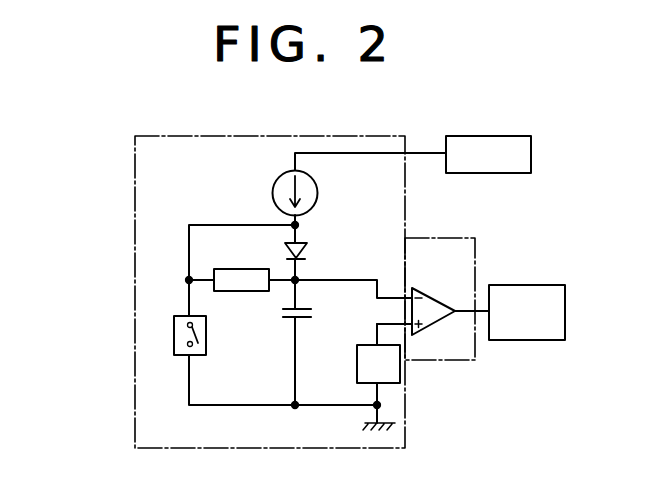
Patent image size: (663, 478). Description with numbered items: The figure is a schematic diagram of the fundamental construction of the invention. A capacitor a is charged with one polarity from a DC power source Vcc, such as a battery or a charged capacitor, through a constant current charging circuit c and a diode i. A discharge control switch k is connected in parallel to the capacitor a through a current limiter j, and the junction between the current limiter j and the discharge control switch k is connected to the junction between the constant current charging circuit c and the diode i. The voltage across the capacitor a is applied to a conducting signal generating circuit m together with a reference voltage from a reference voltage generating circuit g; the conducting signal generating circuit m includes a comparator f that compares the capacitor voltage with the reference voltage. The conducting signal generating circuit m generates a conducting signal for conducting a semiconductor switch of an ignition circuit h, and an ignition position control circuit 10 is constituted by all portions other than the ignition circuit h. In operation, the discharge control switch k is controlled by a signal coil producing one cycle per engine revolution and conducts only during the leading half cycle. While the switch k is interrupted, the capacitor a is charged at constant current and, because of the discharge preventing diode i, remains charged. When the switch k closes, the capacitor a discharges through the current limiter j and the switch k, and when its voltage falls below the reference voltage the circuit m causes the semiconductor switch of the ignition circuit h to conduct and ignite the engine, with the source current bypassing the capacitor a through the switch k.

The ignition position control circuit 10 is at (133, 207).
The constant current charging circuit c is at (318, 192).
The diode i is at (307, 249).
The current limiter j is at (225, 292).
The capacitor a is at (315, 315).
The discharge control switch k is at (177, 339).
The DC power source Vcc is at (472, 136).
The conducting signal generating circuit m is at (458, 238).
The comparator f is at (437, 303).
The reference voltage generating circuit g is at (430, 388).
The ignition circuit h is at (508, 342).